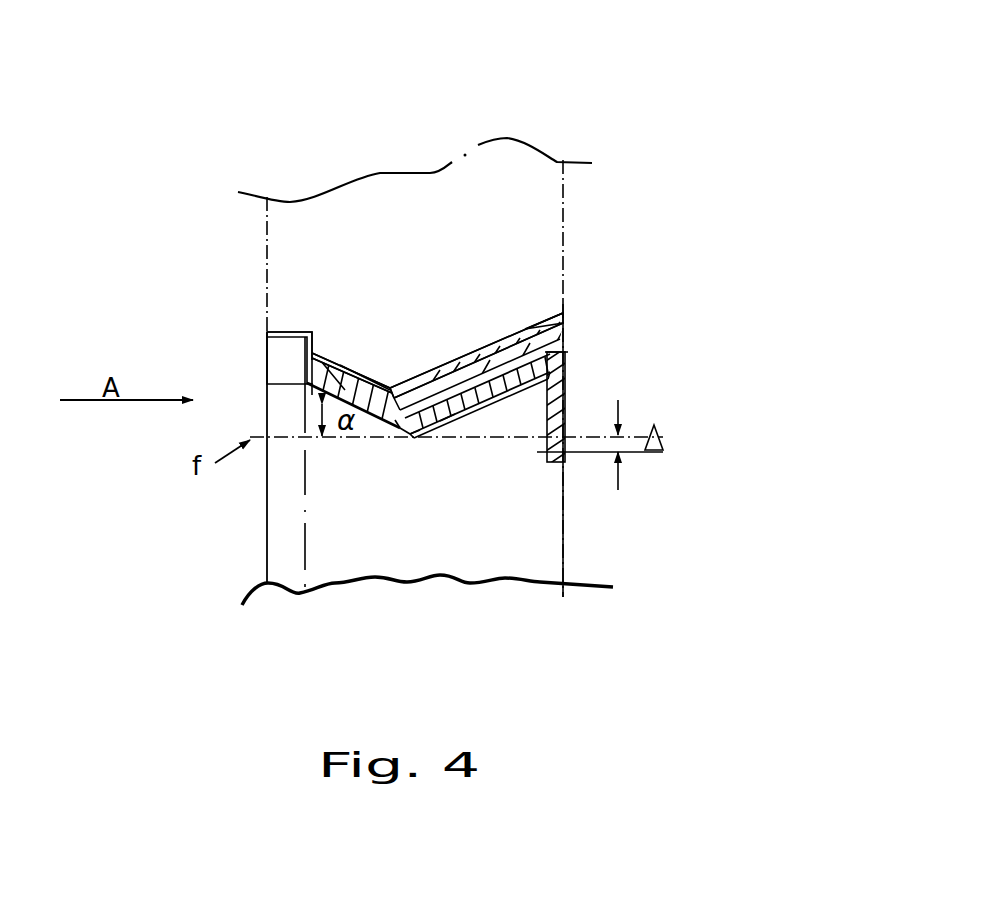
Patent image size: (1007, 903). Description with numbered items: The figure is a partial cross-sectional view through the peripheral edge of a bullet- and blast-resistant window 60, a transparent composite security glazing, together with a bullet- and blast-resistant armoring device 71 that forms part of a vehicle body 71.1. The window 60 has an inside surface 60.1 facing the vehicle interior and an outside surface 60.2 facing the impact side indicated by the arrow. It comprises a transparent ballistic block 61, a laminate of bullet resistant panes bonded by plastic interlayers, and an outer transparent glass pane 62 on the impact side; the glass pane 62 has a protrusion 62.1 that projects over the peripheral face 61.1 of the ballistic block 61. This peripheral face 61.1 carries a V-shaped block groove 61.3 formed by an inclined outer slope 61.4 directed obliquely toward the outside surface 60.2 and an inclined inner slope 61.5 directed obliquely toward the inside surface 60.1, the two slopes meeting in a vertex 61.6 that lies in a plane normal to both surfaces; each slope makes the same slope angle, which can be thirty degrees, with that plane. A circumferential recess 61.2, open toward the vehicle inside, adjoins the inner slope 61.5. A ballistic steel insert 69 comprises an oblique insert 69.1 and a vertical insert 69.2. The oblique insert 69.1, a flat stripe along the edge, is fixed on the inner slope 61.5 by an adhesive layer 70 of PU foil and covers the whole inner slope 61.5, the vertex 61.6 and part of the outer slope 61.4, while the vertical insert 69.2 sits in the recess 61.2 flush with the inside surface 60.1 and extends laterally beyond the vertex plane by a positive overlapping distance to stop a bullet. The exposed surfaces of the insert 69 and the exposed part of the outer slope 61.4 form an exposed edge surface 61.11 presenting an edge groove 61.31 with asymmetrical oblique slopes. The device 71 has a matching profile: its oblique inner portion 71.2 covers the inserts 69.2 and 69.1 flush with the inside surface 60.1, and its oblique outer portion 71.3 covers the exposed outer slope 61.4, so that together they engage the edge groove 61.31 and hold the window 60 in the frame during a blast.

The bullet- and blast-resistant window 60 is at (510, 567).
The inside surface of the window 60.1 is at (567, 542).
The outside surface of the window 60.2 is at (263, 522).
The ballistic block 61 is at (363, 543).
The peripheral face of the ballistic block 61.1 is at (385, 437).
The circumferential recess 61.2 is at (570, 397).
The block groove 61.3 is at (385, 390).
The edge groove 61.31 is at (399, 392).
The outer slope 61.4 is at (308, 398).
The inner slope 61.5 is at (443, 437).
The vertex 61.6 is at (410, 440).
The exposed edge surface 61.11 is at (365, 390).
The outer glass pane 62 is at (287, 543).
The protrusion 62.1 is at (268, 362).
The bullet resistant insert 69 is at (565, 370).
The oblique insert 69.1 is at (467, 345).
The vertical insert 69.2 is at (570, 383).
The adhesive layer 70 is at (463, 403).
The bullet- and blast-resistant armoring device 71 is at (570, 320).
The vehicle body 71.1 is at (405, 192).
The oblique inner portion 71.2 is at (518, 340).
The oblique outer portion 71.3 is at (345, 382).